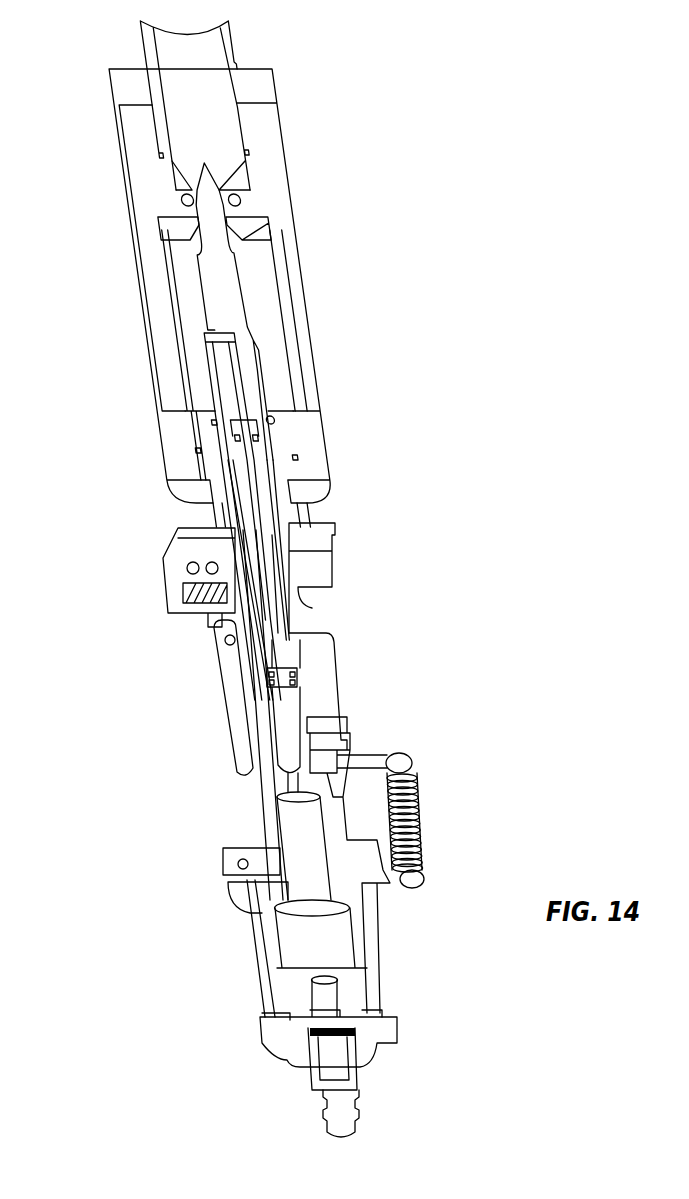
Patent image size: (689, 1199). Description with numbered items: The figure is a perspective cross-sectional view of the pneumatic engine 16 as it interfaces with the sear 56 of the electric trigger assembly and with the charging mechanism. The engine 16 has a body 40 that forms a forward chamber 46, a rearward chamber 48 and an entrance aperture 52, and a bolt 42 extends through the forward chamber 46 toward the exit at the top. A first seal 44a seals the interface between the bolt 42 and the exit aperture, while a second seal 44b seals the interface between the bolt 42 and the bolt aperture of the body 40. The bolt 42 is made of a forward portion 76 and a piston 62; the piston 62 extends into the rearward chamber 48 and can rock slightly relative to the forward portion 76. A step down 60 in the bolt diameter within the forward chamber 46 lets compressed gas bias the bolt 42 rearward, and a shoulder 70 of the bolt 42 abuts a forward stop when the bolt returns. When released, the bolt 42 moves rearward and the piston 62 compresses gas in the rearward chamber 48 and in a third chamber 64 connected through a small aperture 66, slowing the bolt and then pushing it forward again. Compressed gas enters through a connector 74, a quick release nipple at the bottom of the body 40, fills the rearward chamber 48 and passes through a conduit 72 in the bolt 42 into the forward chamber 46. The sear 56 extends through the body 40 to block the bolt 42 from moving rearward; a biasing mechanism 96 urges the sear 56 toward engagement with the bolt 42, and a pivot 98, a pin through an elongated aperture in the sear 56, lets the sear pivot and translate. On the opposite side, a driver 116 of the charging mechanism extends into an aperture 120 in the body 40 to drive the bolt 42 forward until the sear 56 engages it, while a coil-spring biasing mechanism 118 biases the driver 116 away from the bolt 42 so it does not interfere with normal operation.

The engine 16 is at (467, 294).
The body 40 is at (130, 457).
The bolt 42 is at (206, 372).
The first seal 44a is at (181, 203).
The second seal 44b is at (272, 417).
The forward chamber 46 is at (170, 327).
The rearward chamber 48 is at (301, 705).
The entrance aperture 52 is at (283, 778).
The sear 56 is at (236, 673).
The step down 60 is at (252, 318).
The piston 62 is at (264, 520).
The third chamber 64 is at (279, 940).
The small aperture 66 is at (318, 977).
The shoulder 70 is at (245, 237).
The conduit 72 is at (216, 326).
The connector 74 is at (325, 1118).
The forward portion 76 is at (224, 389).
The biasing mechanism 96 is at (186, 601).
The pivot 98 is at (225, 642).
The driver 116 is at (326, 660).
The biasing mechanism 118 is at (421, 800).
The aperture 120 is at (317, 574).